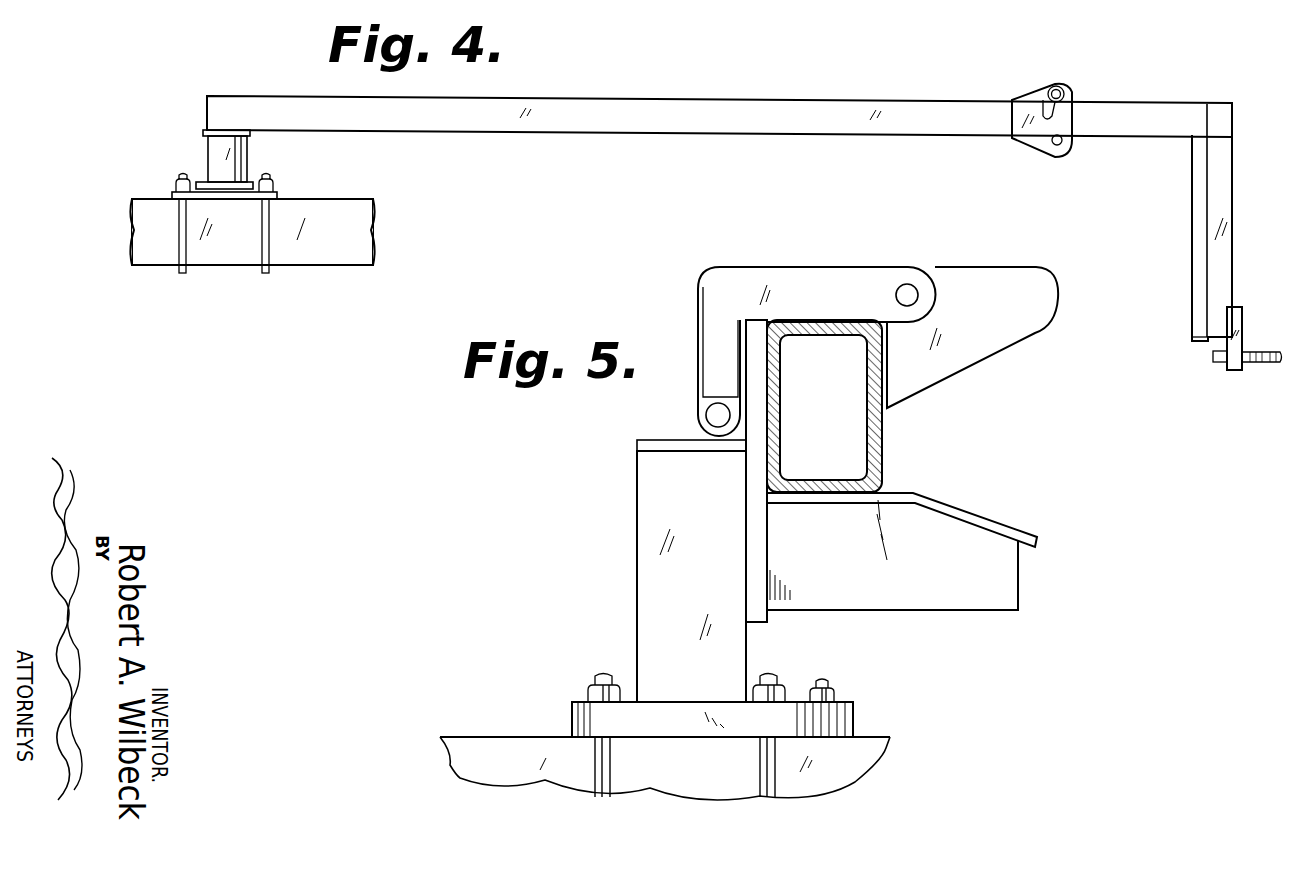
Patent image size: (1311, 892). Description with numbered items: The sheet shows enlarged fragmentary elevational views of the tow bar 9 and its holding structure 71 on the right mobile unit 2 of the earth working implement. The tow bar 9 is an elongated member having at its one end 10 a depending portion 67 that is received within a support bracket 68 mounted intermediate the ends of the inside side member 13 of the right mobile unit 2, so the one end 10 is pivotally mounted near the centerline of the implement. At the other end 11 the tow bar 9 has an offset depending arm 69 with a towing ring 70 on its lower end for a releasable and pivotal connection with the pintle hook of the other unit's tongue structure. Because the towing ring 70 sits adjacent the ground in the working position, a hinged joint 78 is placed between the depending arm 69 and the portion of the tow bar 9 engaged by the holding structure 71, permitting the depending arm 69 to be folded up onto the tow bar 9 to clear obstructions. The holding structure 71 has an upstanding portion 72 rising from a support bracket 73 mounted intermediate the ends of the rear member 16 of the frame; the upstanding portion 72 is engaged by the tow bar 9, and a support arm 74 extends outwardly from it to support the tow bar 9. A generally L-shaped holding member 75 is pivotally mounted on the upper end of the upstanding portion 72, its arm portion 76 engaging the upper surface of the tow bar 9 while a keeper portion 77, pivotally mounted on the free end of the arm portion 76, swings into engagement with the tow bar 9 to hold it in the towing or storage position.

In FIG. 4, the right mobile unit 2 is at (140, 196).
In FIG. 4, the tow bar 9 is at (828, 94).
In FIG. 5, the tow bar 9 is at (885, 447).
In FIG. 4, the one end of tow bar 10 is at (203, 124).
In FIG. 4, the other end of tow bar 11 is at (1216, 283).
In FIG. 4, the inside side member 13 is at (158, 258).
In FIG. 5, the rear member 16 is at (870, 740).
In FIG. 4, the depending portion 67 is at (215, 152).
In FIG. 4, the support bracket 68 is at (247, 180).
In FIG. 4, the offset depending arm 69 is at (1220, 178).
In FIG. 4, the towing ring 70 is at (1268, 350).
In FIG. 5, the holding structure 71 is at (621, 521).
In FIG. 5, the upstanding portion 72 is at (746, 558).
In FIG. 5, the support bracket 73 is at (572, 700).
In FIG. 5, the support arm 74 is at (1000, 590).
In FIG. 5, the holding member 75 is at (734, 264).
In FIG. 5, the arm portion 76 is at (828, 282).
In FIG. 5, the keeper portion 77 is at (997, 345).
In FIG. 4, the hinged joint 78 is at (1018, 88).